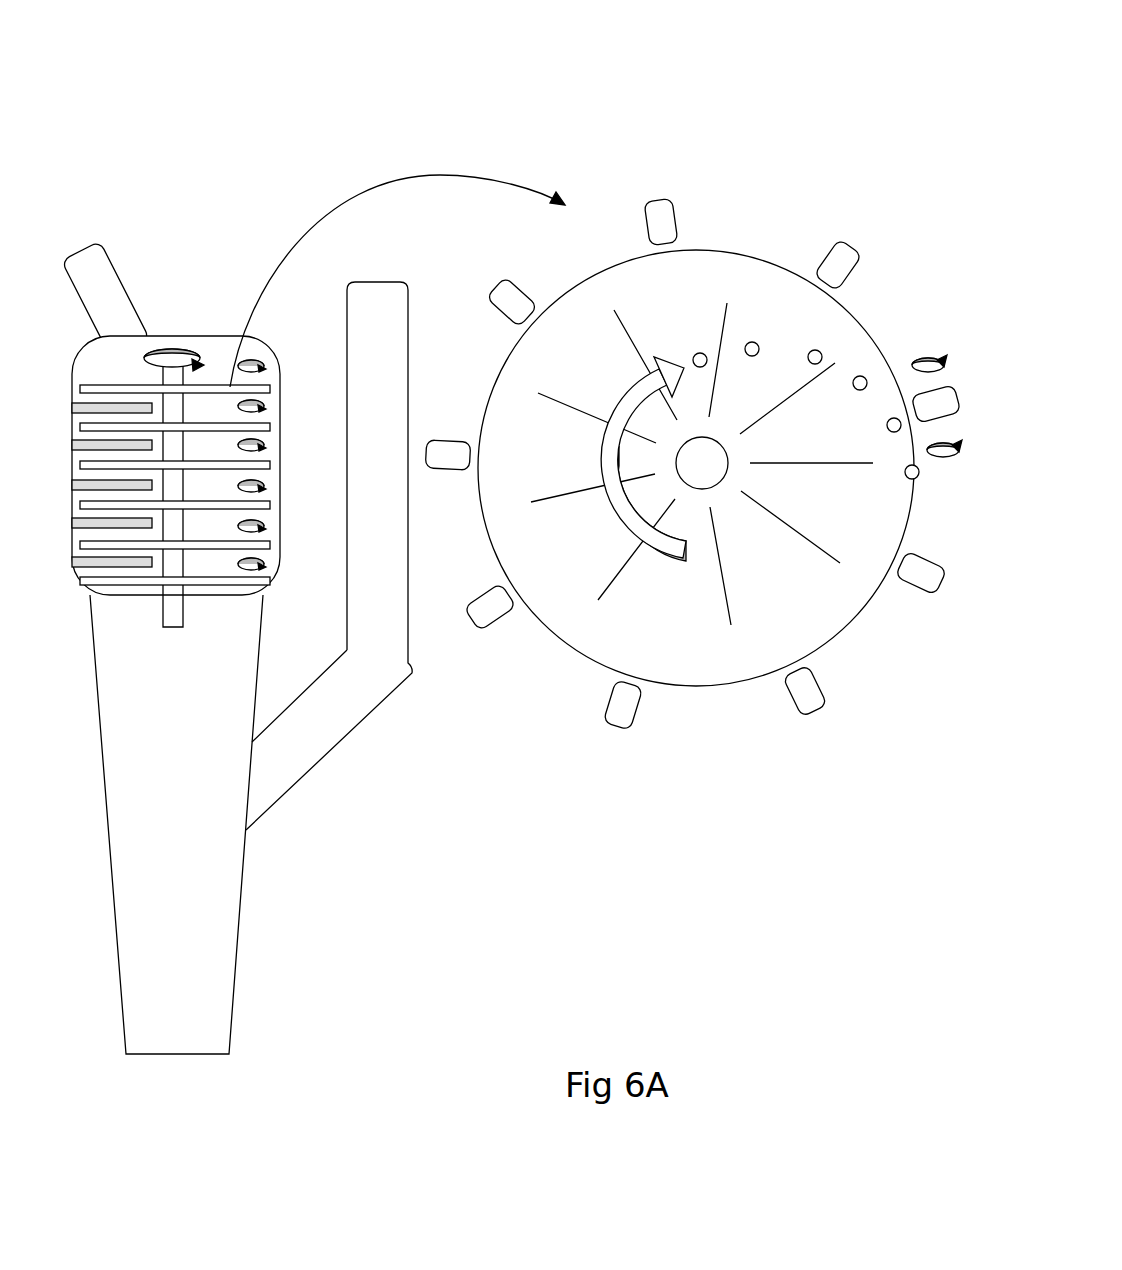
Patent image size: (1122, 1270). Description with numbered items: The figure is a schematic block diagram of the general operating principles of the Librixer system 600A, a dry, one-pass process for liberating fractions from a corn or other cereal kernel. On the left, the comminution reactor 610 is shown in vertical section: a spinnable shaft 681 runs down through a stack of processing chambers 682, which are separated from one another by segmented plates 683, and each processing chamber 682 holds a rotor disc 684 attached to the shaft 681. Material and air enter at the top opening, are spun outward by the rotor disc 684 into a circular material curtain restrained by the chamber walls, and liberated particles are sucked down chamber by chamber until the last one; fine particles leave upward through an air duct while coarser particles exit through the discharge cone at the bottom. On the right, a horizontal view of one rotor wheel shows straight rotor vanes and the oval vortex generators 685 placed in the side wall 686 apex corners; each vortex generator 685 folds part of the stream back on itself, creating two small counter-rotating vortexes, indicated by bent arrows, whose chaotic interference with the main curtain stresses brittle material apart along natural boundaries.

The Librixer system 600A is at (795, 50).
The comminution reactor 610 is at (188, 438).
The spinnable shaft 681 is at (168, 347).
The processing chamber 682 is at (272, 406).
The segmented plate 683 is at (100, 565).
The rotor disc 684 is at (276, 464).
The vortex generator 685 is at (665, 210).
The side wall 686 is at (278, 567).